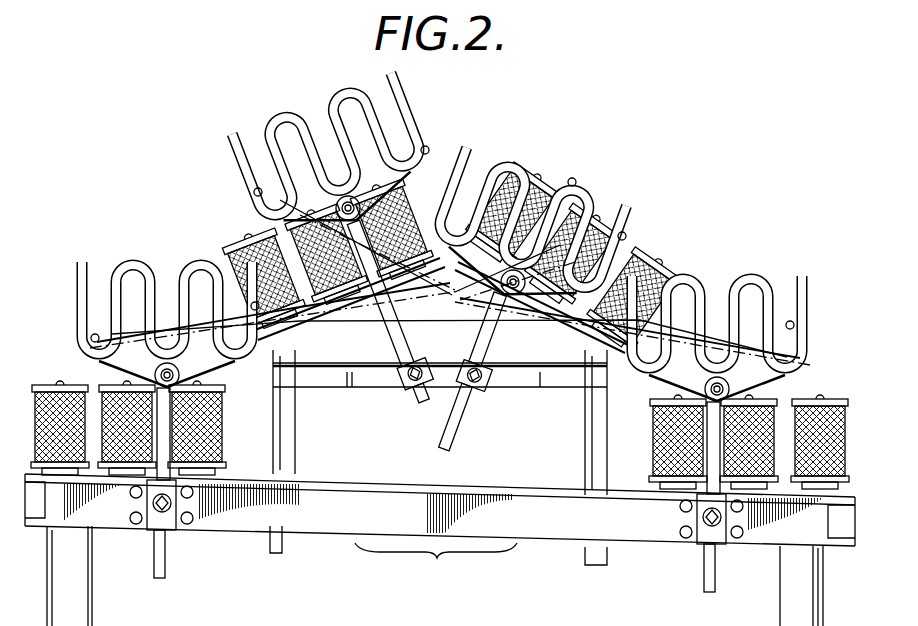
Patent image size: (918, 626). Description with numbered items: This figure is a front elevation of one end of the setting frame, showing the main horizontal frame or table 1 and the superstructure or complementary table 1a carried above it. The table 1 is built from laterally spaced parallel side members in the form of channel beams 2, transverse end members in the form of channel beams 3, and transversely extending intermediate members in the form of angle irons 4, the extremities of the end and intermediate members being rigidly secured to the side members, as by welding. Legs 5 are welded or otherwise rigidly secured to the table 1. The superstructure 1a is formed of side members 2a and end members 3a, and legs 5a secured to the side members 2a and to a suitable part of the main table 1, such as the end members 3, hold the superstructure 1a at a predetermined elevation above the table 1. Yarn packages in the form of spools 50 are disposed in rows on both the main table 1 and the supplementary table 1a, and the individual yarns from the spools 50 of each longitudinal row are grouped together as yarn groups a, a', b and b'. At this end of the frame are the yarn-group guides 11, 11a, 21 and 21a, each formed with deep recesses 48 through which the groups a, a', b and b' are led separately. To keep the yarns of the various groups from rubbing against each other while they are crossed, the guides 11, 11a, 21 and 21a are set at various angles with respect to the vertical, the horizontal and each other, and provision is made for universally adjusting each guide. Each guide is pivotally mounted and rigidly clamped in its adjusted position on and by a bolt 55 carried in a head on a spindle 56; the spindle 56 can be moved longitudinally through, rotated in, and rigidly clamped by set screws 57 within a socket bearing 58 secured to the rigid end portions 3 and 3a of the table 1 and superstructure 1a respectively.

The main horizontal frame or table 1 is at (446, 583).
The superstructure 1a is at (462, 346).
The channel beams 2 is at (42, 522).
The side members 2a is at (273, 368).
The channel beams 3 is at (540, 537).
The end members 3a is at (560, 335).
The angle irons 4 is at (368, 481).
The legs 5 is at (76, 612).
The legs 5a is at (283, 450).
The yarn-group guide 11 is at (205, 266).
The yarn-group guide 11a is at (370, 102).
The yarn-group guide 21 is at (753, 278).
The yarn-group guide 21a is at (568, 163).
The deep recesses 48 is at (425, 150).
The spools 50 is at (238, 248).
The bolt 55 is at (158, 375).
The spindle 56 is at (168, 578).
The set screws 57 is at (150, 522).
The socket bearings 58 is at (178, 533).
The yarn group a is at (438, 320).
The yarn group b is at (632, 331).
The yarn group a' is at (390, 218).
The yarn group b' is at (495, 253).